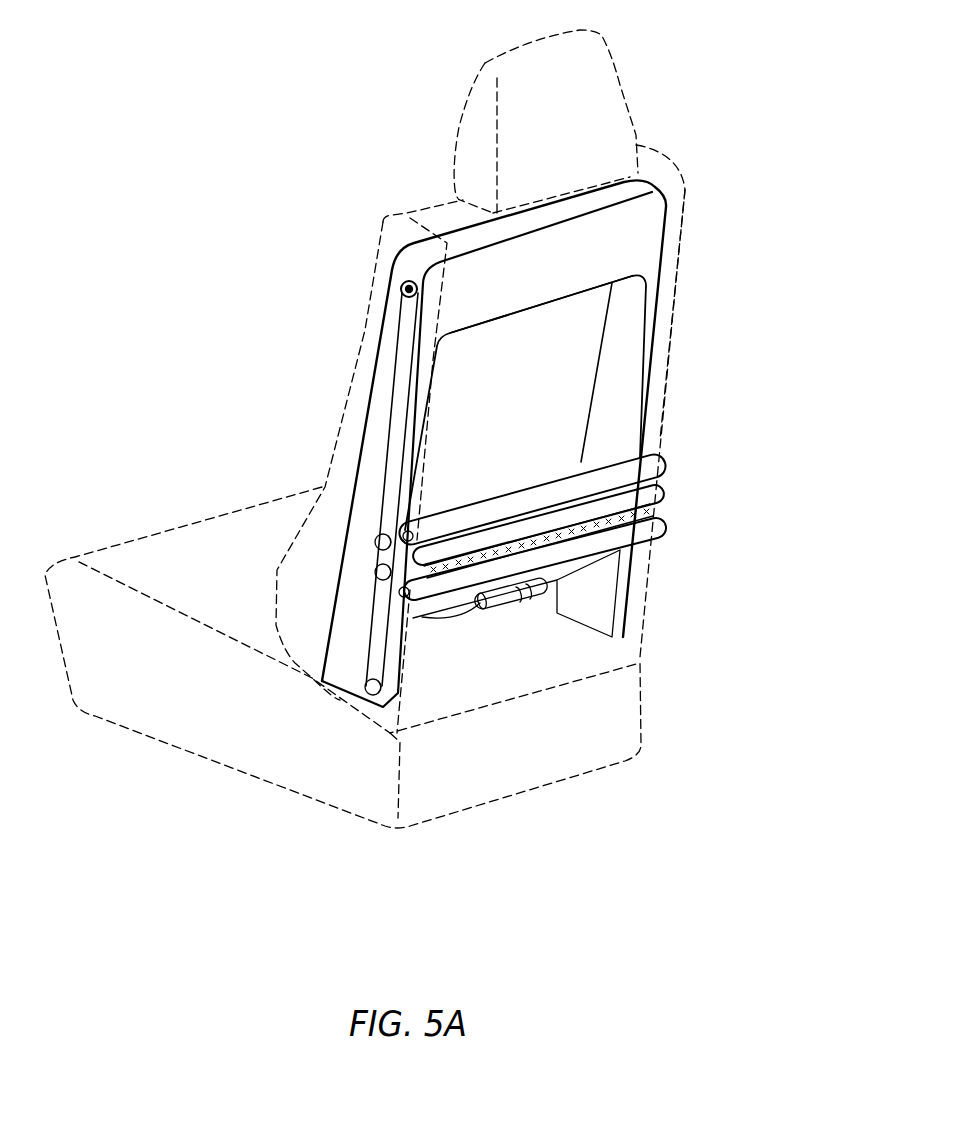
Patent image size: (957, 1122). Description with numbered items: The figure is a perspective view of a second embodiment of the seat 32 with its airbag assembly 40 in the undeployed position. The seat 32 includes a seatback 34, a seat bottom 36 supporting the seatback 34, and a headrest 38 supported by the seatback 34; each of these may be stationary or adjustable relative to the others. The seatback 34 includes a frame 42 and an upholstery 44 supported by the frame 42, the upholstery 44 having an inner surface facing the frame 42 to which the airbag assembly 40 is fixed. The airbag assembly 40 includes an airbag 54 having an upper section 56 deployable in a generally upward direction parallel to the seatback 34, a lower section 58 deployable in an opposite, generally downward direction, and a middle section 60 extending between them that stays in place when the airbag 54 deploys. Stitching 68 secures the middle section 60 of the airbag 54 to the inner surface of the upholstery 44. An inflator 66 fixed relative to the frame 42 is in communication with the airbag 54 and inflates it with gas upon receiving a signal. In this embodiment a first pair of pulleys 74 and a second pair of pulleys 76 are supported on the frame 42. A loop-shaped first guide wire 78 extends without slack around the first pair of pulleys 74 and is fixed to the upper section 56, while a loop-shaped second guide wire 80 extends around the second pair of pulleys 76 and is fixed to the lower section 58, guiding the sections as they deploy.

The seat 32 is at (203, 176).
The seatback 34 is at (372, 287).
The seat bottom 36 is at (165, 522).
The headrest 38 is at (457, 127).
The airbag assembly 40 is at (682, 488).
The frame 42 is at (412, 243).
The upholstery 44 is at (690, 224).
The airbag 54 is at (507, 493).
The upper section 56 is at (532, 483).
The lower section 58 is at (658, 530).
The middle section 60 is at (660, 503).
The inflator 66 is at (497, 608).
The stitching 68 is at (620, 518).
The first pair of pulleys 74 is at (378, 540).
The second pair of pulleys 76 is at (360, 683).
The first guide wire 78 is at (419, 318).
The second guide wire 80 is at (400, 627).